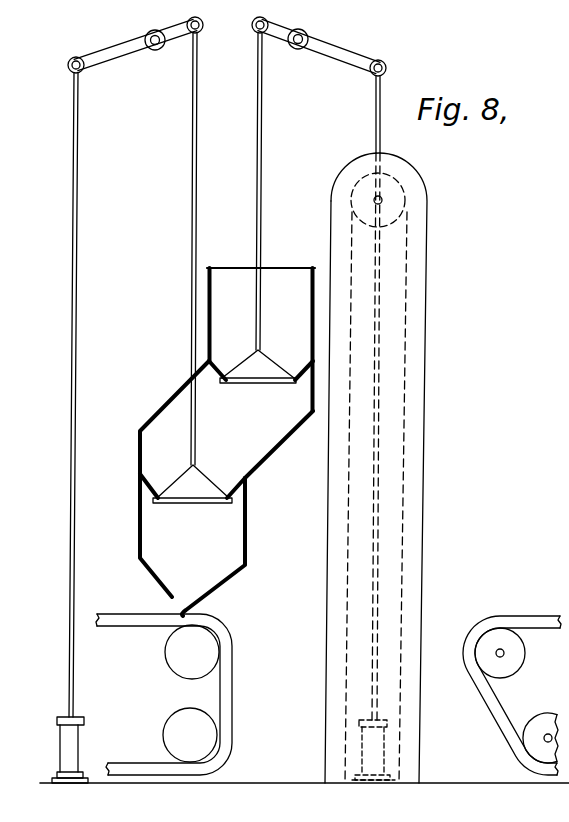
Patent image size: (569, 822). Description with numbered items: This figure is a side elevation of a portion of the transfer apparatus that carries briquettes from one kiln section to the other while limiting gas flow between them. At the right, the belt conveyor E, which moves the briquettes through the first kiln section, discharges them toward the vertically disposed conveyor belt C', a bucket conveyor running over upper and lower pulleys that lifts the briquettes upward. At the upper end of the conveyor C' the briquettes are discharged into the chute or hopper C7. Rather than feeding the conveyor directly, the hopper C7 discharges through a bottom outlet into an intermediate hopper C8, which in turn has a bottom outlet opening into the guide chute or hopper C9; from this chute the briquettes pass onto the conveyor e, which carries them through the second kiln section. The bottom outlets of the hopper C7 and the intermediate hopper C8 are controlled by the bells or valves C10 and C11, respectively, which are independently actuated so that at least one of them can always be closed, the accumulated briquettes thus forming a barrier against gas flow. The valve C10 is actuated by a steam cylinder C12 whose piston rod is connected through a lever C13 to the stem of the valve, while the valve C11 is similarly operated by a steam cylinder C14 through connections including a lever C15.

The lever C15 is at (110, 55).
The lever C13 is at (323, 50).
The chute or hopper C7 is at (261, 339).
The bell or valve C10 is at (268, 362).
The intermediate hopper C8 is at (226, 429).
The bell or valve C11 is at (180, 487).
The guide chute or hopper C9 is at (192, 545).
The conveyor e is at (138, 622).
The steam cylinder C14 is at (78, 740).
The vertically disposed conveyor belt C' is at (394, 468).
The steam cylinder C12 is at (362, 740).
The belt conveyor E is at (525, 617).